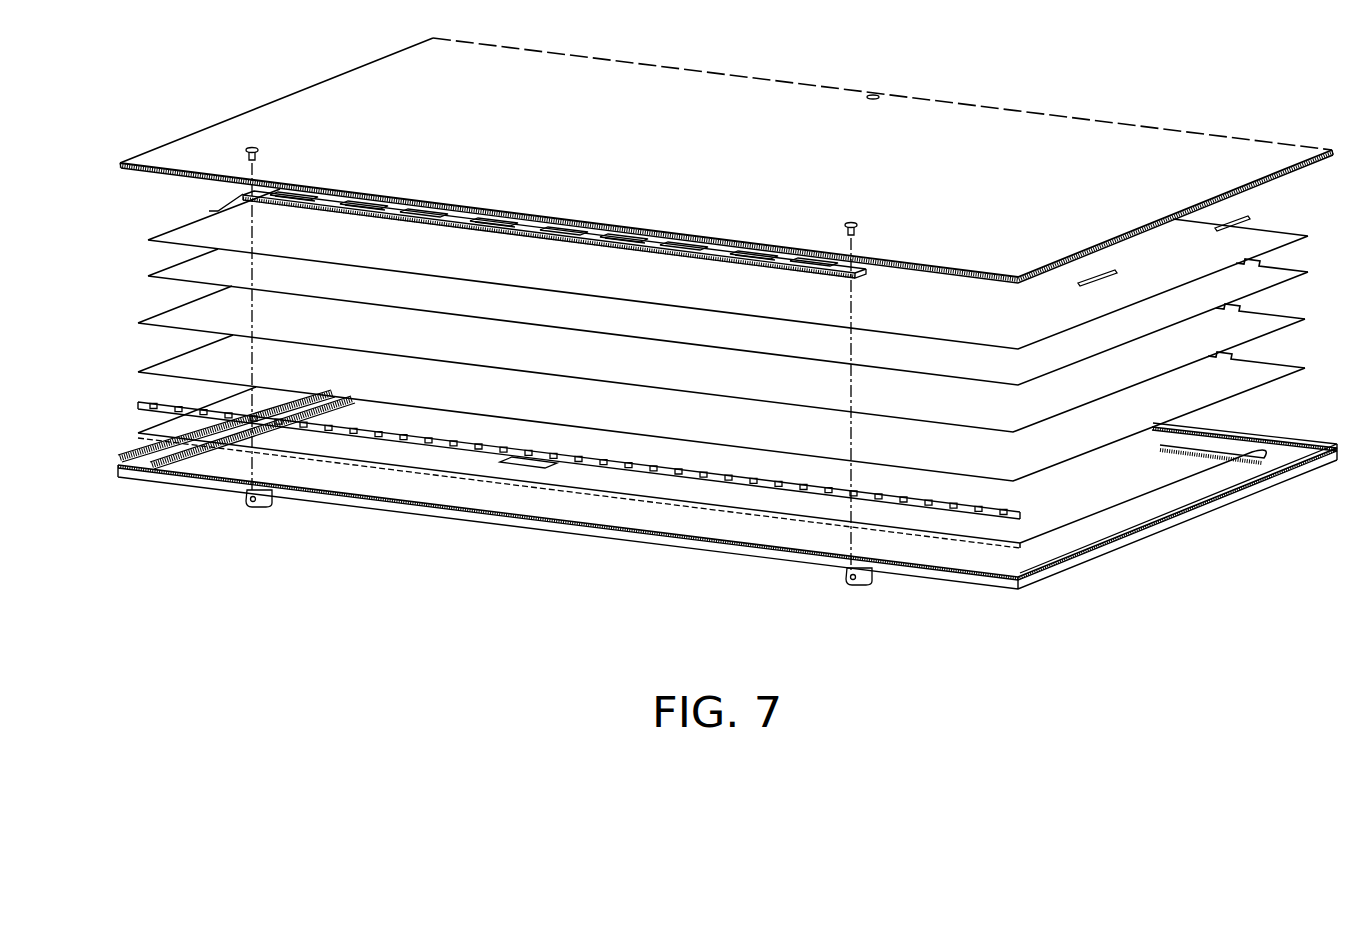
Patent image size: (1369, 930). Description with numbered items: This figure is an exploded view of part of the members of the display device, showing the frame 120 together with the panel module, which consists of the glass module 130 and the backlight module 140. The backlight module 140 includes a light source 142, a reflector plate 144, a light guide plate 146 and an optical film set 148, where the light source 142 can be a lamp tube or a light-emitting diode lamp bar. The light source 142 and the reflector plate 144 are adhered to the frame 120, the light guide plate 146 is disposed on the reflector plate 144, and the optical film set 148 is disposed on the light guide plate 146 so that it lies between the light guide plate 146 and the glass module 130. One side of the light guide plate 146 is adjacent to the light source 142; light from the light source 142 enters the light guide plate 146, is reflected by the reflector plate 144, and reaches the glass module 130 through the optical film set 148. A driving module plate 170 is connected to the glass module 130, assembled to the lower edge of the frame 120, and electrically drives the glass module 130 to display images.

The frame 120 is at (1207, 510).
The glass module 130 is at (1043, 130).
The backlight module 140 is at (163, 297).
The light source 142 is at (1020, 514).
The reflector plate 144 is at (1270, 370).
The light guide plate 146 is at (1270, 322).
The optical film set 148 is at (1270, 242).
The driving module plate 170 is at (778, 247).